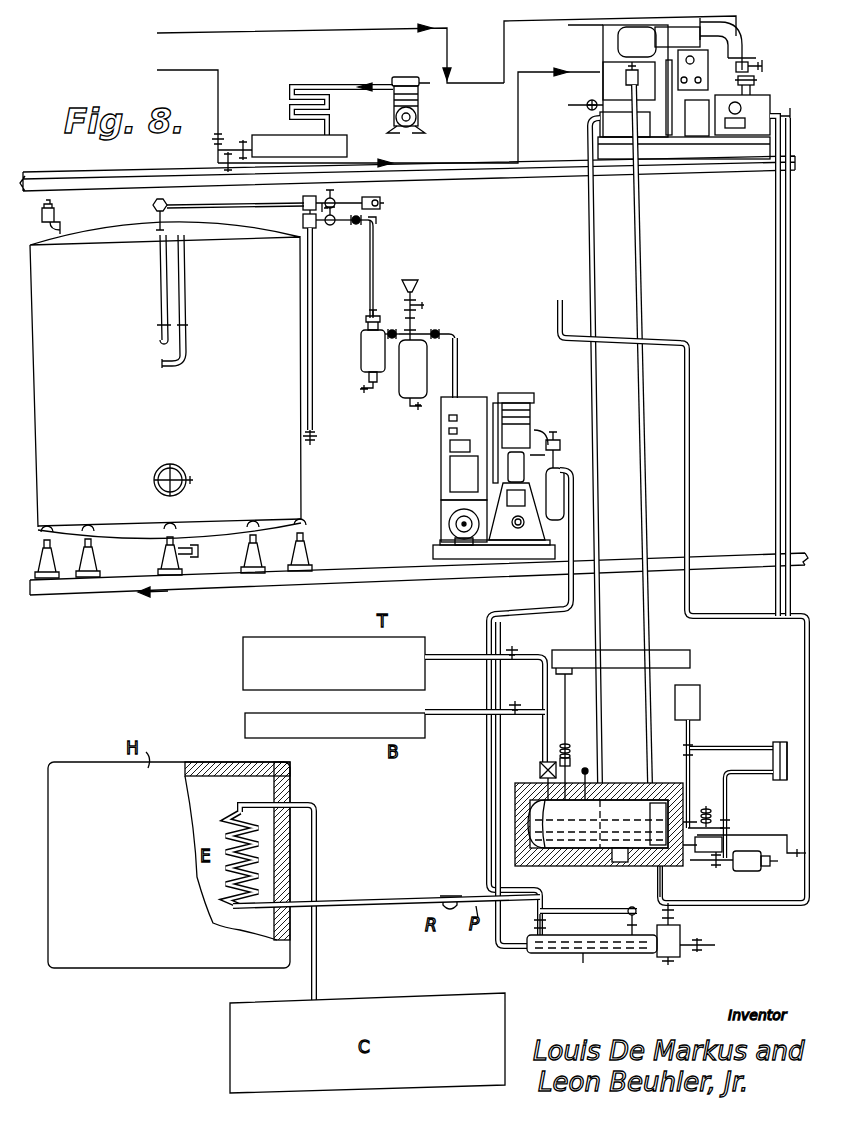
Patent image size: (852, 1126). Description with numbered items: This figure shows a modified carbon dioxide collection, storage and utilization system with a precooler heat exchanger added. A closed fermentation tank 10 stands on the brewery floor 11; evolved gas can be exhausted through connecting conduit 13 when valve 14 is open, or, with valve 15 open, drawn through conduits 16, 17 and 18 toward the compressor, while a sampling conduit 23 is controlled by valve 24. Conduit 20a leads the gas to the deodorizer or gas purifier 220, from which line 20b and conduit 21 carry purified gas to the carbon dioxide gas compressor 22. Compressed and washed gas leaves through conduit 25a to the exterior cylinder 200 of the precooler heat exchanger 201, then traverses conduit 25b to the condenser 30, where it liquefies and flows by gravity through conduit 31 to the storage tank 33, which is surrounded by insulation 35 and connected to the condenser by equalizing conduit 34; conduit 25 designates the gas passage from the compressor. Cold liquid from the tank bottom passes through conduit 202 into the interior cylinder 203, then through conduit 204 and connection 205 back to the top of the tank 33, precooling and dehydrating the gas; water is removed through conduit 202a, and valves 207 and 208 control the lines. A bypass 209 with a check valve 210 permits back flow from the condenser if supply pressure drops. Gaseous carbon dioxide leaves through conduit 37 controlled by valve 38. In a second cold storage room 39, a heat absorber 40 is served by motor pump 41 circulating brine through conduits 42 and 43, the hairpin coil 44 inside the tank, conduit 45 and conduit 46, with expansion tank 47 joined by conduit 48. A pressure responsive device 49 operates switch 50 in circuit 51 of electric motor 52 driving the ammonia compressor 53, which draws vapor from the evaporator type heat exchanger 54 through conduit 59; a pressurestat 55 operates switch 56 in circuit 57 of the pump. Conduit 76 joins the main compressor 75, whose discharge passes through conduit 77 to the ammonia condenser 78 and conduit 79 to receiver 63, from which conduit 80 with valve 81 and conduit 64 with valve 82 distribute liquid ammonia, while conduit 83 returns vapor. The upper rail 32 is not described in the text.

The fermentation tank 10 is at (300, 477).
The brewery floor 11 is at (419, 583).
The connecting conduit 13 is at (382, 199).
The valve 14 is at (322, 198).
The valve 15 is at (330, 226).
The conduit 16 is at (303, 218).
The conduit 17 is at (344, 226).
The conduit 18 is at (374, 262).
The conduit 20a is at (390, 330).
The line 20b is at (436, 328).
The conduit 21 is at (449, 364).
The carbon dioxide gas compressor 22 is at (470, 427).
The conduit 23 is at (316, 327).
The valve 24 is at (318, 438).
The conduit 25 is at (588, 277).
The conduit 25a is at (550, 612).
The conduit 25b is at (806, 702).
The condenser 30 is at (603, 88).
The conduit 31 is at (596, 404).
The upper rail 32 is at (692, 166).
The storage tank 33 is at (530, 824).
The equalizing conduit 34 is at (644, 424).
The insulation 35 is at (518, 802).
The conduit 37 is at (543, 729).
The valve 38 is at (540, 774).
The second cold storage room 39 is at (784, 774).
The heat absorber 40 is at (782, 746).
The motor pump 41 is at (752, 872).
The conduit 42 is at (726, 748).
The conduit 43 is at (693, 788).
The hairpin coil 44 is at (642, 832).
The conduit 45 is at (722, 870).
The conduit 46 is at (762, 780).
The storage tank 47 is at (700, 698).
The conduit 48 is at (685, 746).
The pressure responsive device 49 is at (571, 764).
The switch 50 is at (572, 675).
The circuit 51 is at (778, 114).
The electric motor 52 is at (757, 92).
The compressor 53 is at (765, 63).
The evaporator type heat exchanger 54 is at (605, 38).
The pressurestat 55 is at (713, 816).
The switch 56 is at (747, 846).
The circuit 57 is at (799, 858).
The conduit 59 is at (698, 38).
The receiver 63 is at (299, 146).
The conduit 64 is at (468, 165).
The main compressor 75 is at (421, 114).
The conduit 76 is at (553, 23).
The conduit 77 is at (331, 92).
The ammonia condenser 78 is at (330, 103).
The conduit 79 is at (333, 127).
The conduit 80 is at (214, 88).
The valve 81 is at (243, 138).
The valve 82 is at (224, 163).
The conduit 83 is at (262, 37).
The exterior cylinder 200 is at (555, 924).
The precooler heat exchanger 201 is at (592, 962).
The conduit 202 is at (666, 886).
The conduit 202a is at (692, 952).
The interior cylinder 203 is at (658, 958).
The conduit 204 is at (513, 862).
The connection 205 is at (589, 777).
The valve 207 is at (675, 913).
The valve 208 is at (684, 964).
The bypass 209 is at (583, 908).
The check valve 210 is at (627, 920).
The deodorizer or gas purifier 220 is at (406, 378).